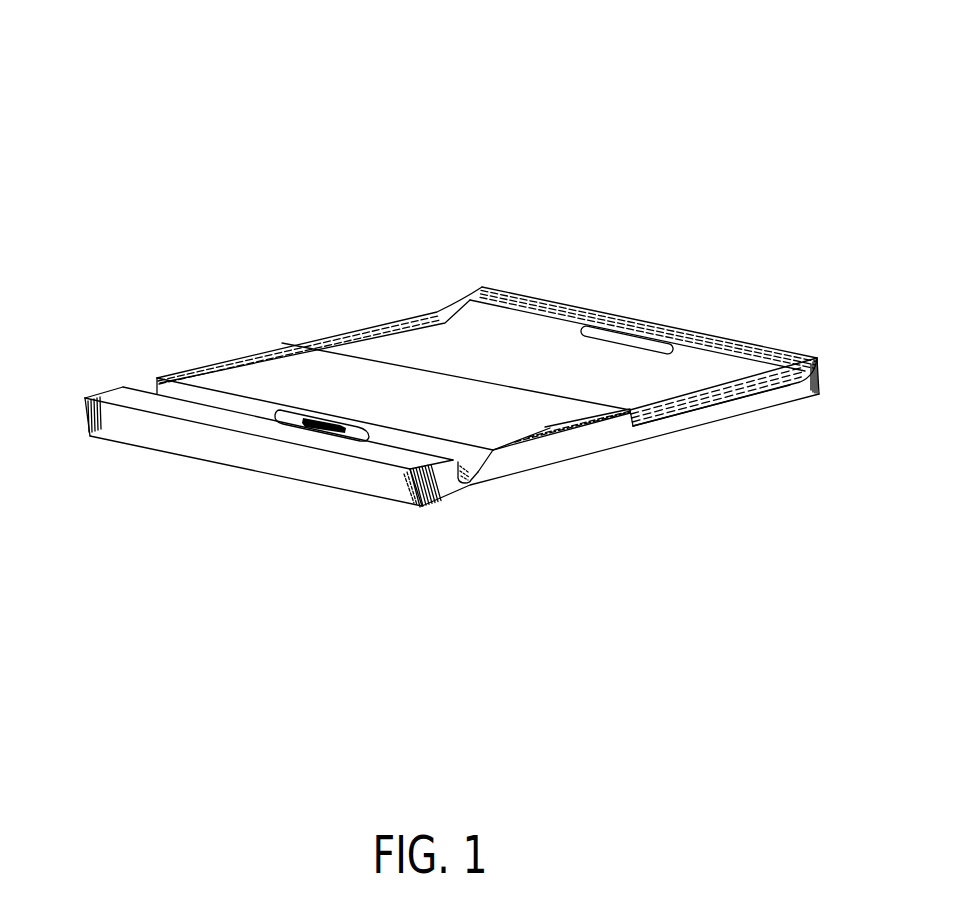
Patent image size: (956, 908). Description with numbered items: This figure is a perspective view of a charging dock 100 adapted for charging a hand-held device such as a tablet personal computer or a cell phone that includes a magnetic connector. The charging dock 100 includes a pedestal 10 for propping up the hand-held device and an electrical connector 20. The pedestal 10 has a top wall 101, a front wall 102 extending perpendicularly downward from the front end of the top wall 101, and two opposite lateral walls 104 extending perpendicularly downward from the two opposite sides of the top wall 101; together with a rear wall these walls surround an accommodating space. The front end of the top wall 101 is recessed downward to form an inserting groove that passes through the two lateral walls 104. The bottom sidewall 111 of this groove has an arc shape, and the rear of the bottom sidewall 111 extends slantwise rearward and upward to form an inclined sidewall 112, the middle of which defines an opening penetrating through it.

The charging dock 100 is at (33, 58).
The pedestal 10 is at (543, 427).
The top wall 101 is at (417, 347).
The front wall 102 is at (352, 473).
The lateral walls 104 is at (657, 428).
The bottom sidewall 111 is at (463, 487).
The inclined sidewall 112 is at (475, 460).
The electrical connector 20 is at (297, 418).